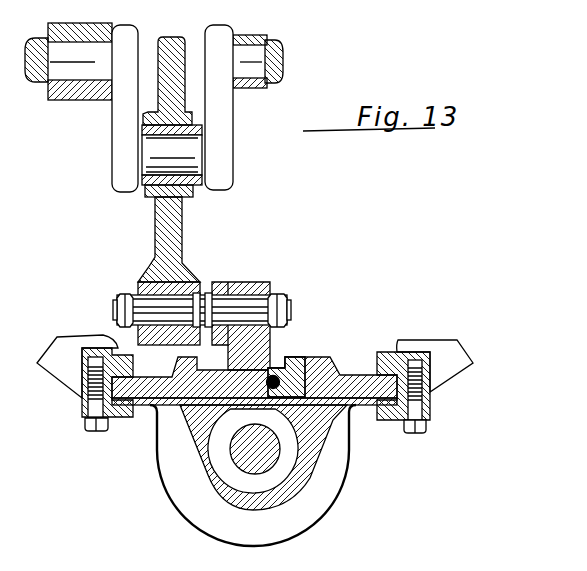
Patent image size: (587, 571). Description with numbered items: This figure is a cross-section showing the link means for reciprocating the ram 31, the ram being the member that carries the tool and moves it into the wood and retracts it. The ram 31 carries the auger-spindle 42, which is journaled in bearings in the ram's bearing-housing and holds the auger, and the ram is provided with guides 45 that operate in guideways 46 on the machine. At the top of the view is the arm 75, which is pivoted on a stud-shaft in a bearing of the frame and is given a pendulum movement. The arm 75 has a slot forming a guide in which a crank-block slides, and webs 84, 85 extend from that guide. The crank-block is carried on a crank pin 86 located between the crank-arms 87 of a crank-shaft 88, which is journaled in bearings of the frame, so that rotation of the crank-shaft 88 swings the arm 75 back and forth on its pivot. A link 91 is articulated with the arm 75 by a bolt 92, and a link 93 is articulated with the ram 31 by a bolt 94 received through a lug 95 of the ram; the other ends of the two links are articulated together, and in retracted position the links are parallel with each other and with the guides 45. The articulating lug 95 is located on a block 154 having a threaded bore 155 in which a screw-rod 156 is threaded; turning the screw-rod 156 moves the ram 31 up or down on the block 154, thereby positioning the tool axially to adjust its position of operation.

The ram 31 is at (287, 510).
The auger-spindle 42 is at (240, 458).
The guides 45 is at (118, 347).
The guideways 46 is at (111, 421).
The arm 75 is at (155, 196).
The web 84 is at (182, 238).
The web 85 is at (183, 52).
The crank pin 86 is at (202, 158).
The crank-arms 87 is at (118, 123).
The crank-shaft 88 is at (47, 82).
The link 91 is at (187, 282).
The bolt 92 is at (121, 297).
The link 93 is at (220, 287).
The bolt 94 is at (290, 306).
The lug 95 is at (275, 341).
The block 154 is at (326, 364).
The threaded bore 155 is at (291, 340).
The screw-rod 156 is at (300, 408).